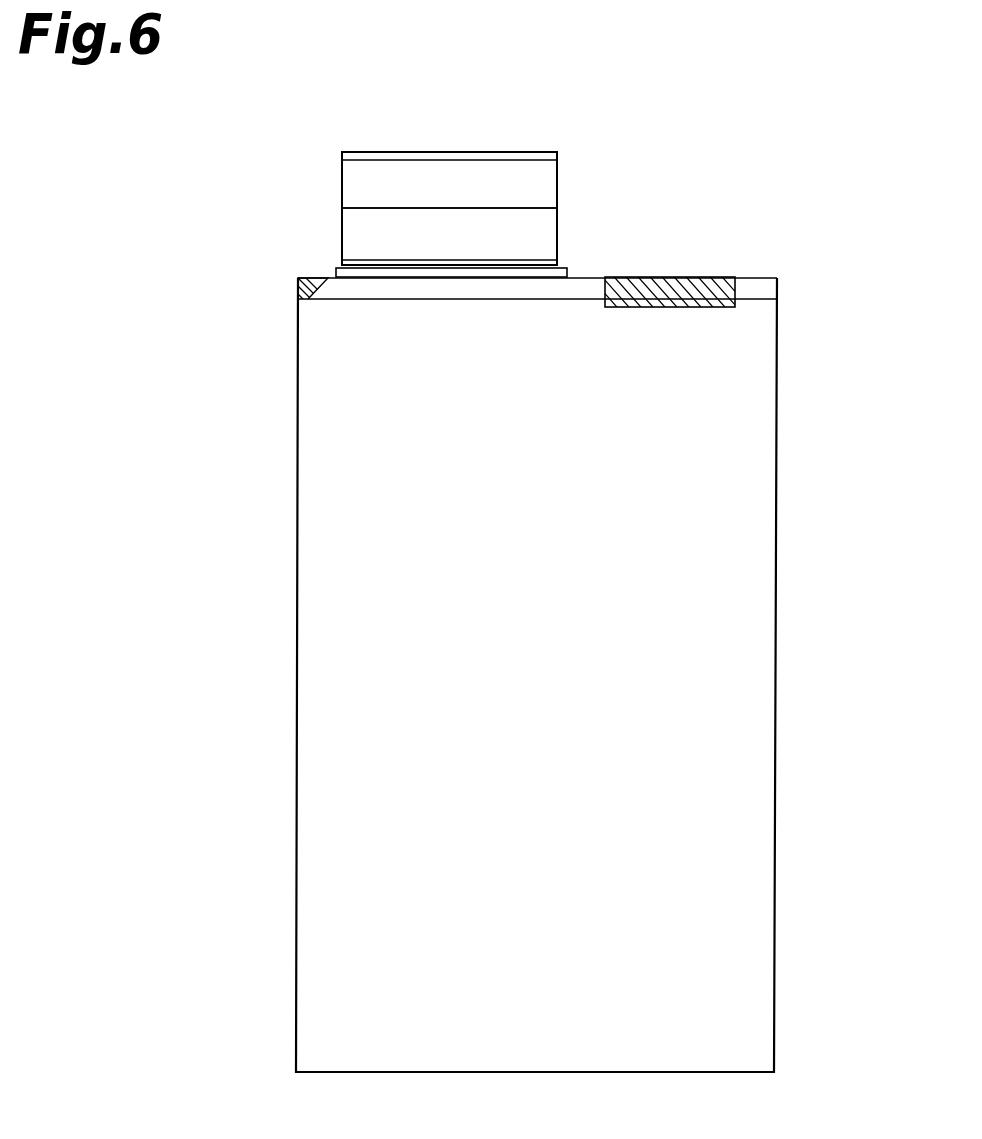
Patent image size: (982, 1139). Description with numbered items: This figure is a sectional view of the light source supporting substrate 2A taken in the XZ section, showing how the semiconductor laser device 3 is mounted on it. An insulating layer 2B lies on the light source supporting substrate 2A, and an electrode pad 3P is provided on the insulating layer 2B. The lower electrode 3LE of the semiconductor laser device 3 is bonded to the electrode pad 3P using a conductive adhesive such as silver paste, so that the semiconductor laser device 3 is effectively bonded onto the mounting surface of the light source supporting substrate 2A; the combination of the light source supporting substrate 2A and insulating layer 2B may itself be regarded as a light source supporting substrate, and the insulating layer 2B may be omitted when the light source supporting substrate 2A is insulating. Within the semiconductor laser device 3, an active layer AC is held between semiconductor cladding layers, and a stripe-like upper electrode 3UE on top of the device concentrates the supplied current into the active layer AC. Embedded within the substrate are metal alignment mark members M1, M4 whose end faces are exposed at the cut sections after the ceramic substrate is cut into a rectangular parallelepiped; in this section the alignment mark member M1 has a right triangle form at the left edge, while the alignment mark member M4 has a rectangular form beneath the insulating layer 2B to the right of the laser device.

The light source supporting substrate 2A is at (760, 656).
The insulating layer 2B is at (763, 287).
The semiconductor laser device 3 is at (540, 188).
The upper electrode 3UE is at (557, 153).
The lower electrode 3LE is at (340, 265).
The electrode pad 3P is at (567, 271).
The active layer AC is at (375, 209).
The alignment mark member M1 is at (300, 289).
The alignment mark member M4 is at (705, 283).